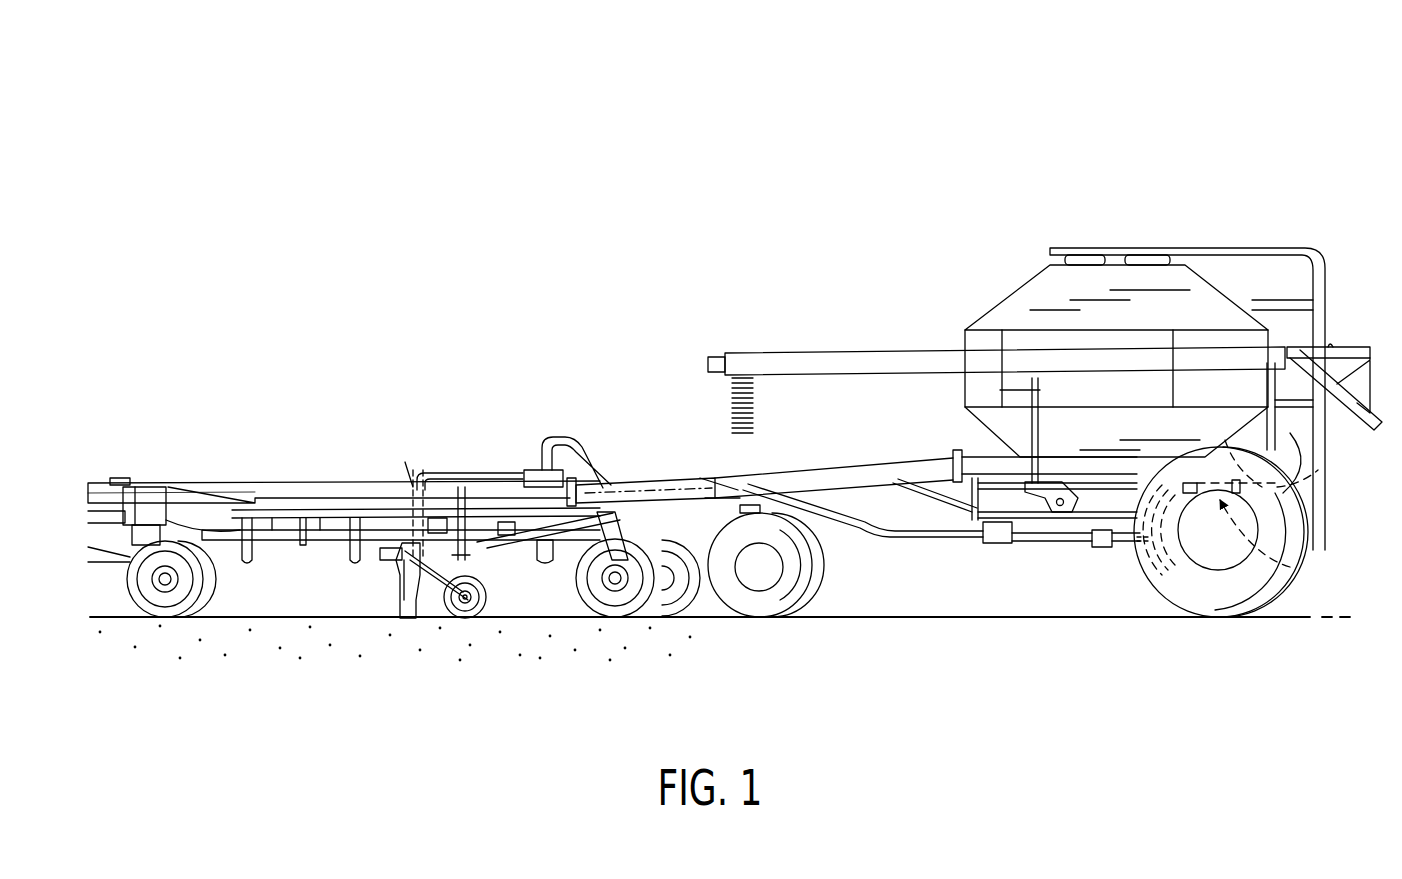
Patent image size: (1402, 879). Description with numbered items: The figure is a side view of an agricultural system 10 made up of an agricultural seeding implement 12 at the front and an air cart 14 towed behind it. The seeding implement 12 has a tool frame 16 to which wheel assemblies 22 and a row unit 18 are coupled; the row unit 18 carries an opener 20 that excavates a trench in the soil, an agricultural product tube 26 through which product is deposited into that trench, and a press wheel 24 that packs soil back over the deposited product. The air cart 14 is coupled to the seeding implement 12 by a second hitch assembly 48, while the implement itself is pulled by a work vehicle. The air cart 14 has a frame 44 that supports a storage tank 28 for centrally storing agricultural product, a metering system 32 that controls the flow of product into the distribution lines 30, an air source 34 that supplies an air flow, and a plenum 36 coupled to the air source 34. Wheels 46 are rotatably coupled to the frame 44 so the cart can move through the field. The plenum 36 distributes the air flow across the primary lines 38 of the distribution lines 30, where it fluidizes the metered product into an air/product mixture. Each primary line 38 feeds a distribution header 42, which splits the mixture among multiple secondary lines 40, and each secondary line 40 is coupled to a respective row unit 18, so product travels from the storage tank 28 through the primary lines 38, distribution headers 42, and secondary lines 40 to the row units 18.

The agricultural system 10 is at (360, 118).
The agricultural seeding implement 12 is at (371, 420).
The air cart 14 is at (1009, 220).
The tool frame 16 is at (398, 488).
The row unit 18 is at (378, 591).
The opener 20 is at (403, 618).
The wheel assemblies 22 is at (172, 620).
The press wheel 24 is at (487, 595).
The agricultural product tube 26 is at (423, 590).
The storage tank 28 is at (1036, 288).
The distribution lines 30 is at (970, 598).
The metering system 32 is at (1077, 533).
The air source 34 is at (1318, 428).
The plenum 36 is at (1290, 567).
The primary lines 38 is at (886, 543).
The secondary lines 40 is at (473, 470).
The distribution header 42 is at (538, 470).
The frame 44 is at (833, 467).
The wheels 46 is at (833, 575).
The second hitch assembly 48 is at (590, 483).